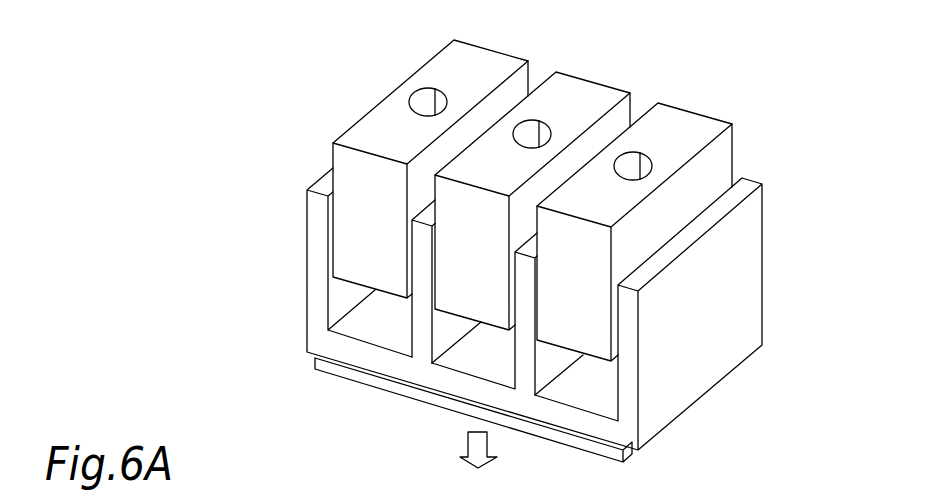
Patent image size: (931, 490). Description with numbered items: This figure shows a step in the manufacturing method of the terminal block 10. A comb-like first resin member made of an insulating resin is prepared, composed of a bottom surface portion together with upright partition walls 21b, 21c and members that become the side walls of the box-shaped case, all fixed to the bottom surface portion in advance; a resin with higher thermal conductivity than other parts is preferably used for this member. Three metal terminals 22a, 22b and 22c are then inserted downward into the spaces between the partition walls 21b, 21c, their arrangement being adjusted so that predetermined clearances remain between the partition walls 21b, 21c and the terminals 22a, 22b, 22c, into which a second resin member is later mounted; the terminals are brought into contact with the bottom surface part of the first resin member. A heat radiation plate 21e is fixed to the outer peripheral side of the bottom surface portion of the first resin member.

The terminal block 10 is at (792, 139).
The partition wall 21b is at (411, 247).
The partition wall 21c is at (514, 284).
The heat radiation plate 21e is at (403, 397).
The terminal 22a is at (492, 51).
The terminal 22b is at (597, 83).
The terminal 22c is at (688, 113).